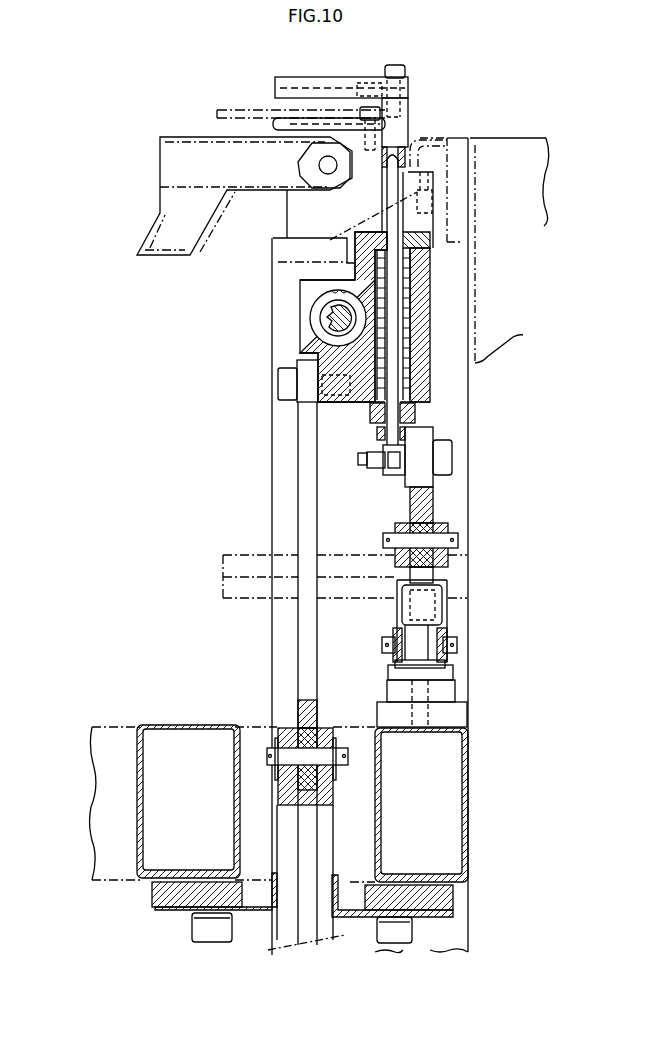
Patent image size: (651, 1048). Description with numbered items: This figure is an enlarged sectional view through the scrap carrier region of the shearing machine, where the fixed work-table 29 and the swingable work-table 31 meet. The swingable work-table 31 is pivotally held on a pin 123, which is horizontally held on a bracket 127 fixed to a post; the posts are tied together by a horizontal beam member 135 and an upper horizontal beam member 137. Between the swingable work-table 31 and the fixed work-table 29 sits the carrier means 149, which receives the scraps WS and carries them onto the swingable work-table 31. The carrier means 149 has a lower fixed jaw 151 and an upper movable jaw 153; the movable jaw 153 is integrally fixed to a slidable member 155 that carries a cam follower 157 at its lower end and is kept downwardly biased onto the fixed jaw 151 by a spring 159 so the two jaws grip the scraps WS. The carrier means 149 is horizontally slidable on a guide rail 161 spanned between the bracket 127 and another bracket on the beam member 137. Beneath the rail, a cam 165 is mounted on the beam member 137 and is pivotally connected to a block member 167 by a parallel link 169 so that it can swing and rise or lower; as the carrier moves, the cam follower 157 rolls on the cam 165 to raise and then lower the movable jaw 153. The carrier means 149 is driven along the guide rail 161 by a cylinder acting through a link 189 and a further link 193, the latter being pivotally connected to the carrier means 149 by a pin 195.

The fixed work-table 29 is at (518, 138).
The swingable work-table 31 is at (160, 137).
The scraps WS is at (258, 110).
The pin 123 is at (300, 162).
The bracket 127 is at (270, 420).
The horizontal beam member 135 is at (463, 217).
The upper horizontal beam member 137 is at (470, 778).
The carrier means 149 is at (300, 293).
The lower fixed jaw 151 is at (233, 129).
The upper movable jaw 153 is at (320, 77).
The slidable member 155 is at (397, 327).
The cam follower 157 is at (430, 423).
The spring 159 is at (406, 283).
The guide rail 161 is at (330, 319).
The cam 165 is at (433, 509).
The block member 167 is at (447, 693).
The parallel link 169 is at (440, 573).
The link 189 is at (288, 823).
The link 193 is at (300, 468).
The pin 195 is at (286, 391).